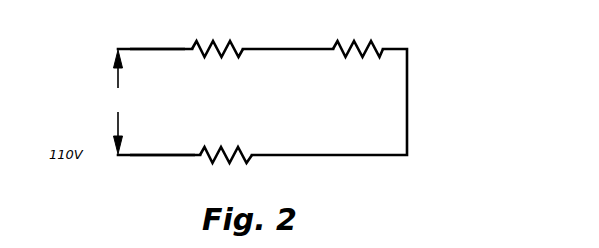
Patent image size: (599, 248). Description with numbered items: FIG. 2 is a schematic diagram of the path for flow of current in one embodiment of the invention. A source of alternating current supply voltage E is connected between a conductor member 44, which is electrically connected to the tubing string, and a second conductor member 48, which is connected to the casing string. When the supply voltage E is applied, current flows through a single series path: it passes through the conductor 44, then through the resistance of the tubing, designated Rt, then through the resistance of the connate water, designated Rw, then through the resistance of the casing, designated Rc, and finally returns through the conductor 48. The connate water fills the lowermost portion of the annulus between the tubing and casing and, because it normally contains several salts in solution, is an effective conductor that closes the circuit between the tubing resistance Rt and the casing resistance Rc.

The conductor member 44 is at (158, 47).
The second conductor member 48 is at (163, 157).
The resistance of the tubing Rt is at (227, 45).
The resistance of the casing Rc is at (378, 45).
The resistance of the water Rw is at (235, 159).
The supply voltage E is at (117, 102).